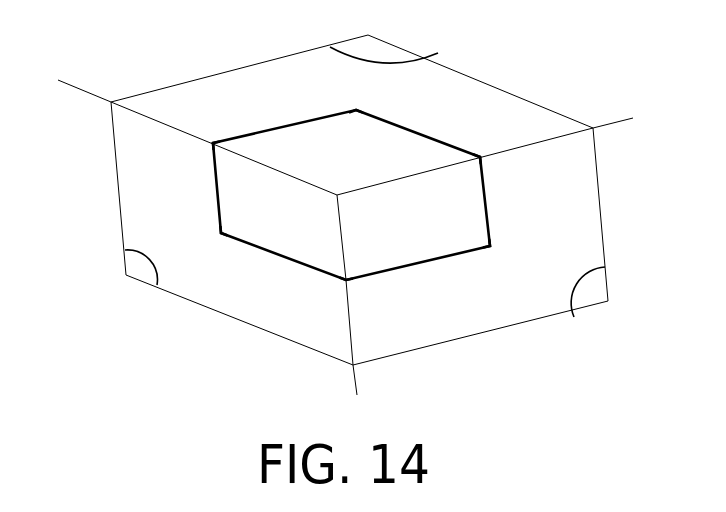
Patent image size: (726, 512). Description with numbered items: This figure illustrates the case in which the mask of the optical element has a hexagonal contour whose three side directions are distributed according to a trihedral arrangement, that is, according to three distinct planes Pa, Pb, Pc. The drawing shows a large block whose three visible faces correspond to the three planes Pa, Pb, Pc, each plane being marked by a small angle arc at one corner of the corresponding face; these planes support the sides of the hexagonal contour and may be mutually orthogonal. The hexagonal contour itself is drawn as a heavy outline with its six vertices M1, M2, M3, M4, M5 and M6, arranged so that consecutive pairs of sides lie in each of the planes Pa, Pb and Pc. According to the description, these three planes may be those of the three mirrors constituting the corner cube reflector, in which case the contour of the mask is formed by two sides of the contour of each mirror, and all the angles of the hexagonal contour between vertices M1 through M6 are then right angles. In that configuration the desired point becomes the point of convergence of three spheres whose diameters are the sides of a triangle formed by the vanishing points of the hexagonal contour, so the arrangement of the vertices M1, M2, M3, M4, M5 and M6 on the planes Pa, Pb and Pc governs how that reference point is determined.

The vertex of hexagonal contour M1 is at (357, 102).
The vertex of hexagonal contour M2 is at (494, 165).
The vertex of hexagonal contour M3 is at (501, 250).
The vertex of hexagonal contour M4 is at (358, 289).
The vertex of hexagonal contour M5 is at (212, 241).
The vertex of hexagonal contour M6 is at (202, 151).
The plane supporting sides of hexagonal contour Pa is at (384, 65).
The plane supporting sides of hexagonal contour Pb is at (579, 289).
The plane supporting sides of hexagonal contour Pc is at (145, 263).